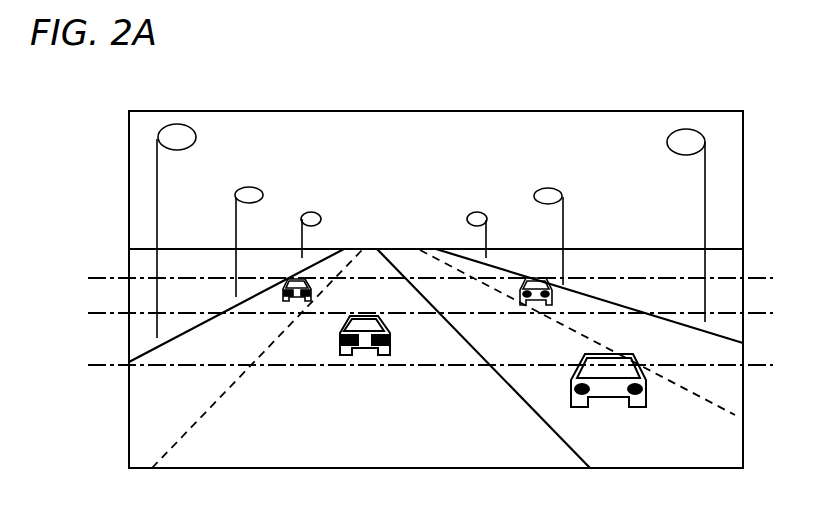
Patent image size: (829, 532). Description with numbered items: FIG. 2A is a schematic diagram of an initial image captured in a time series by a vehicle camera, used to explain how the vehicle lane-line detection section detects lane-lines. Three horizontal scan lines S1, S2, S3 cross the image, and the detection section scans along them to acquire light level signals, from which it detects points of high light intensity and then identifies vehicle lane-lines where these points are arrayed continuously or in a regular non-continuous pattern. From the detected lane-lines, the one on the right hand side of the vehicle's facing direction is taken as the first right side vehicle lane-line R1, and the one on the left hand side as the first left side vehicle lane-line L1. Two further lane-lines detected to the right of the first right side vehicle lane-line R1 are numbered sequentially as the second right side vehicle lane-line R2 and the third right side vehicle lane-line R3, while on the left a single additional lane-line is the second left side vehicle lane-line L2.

The scan line S1 is at (417, 279).
The scan line S2 is at (417, 312).
The scan line S3 is at (417, 364).
The first left side vehicle lane-line L1 is at (183, 432).
The second left side vehicle lane-line L2 is at (152, 352).
The first right side vehicle lane-line R1 is at (573, 452).
The second right side vehicle lane-line R2 is at (720, 406).
The third right side vehicle lane-line R3 is at (728, 342).